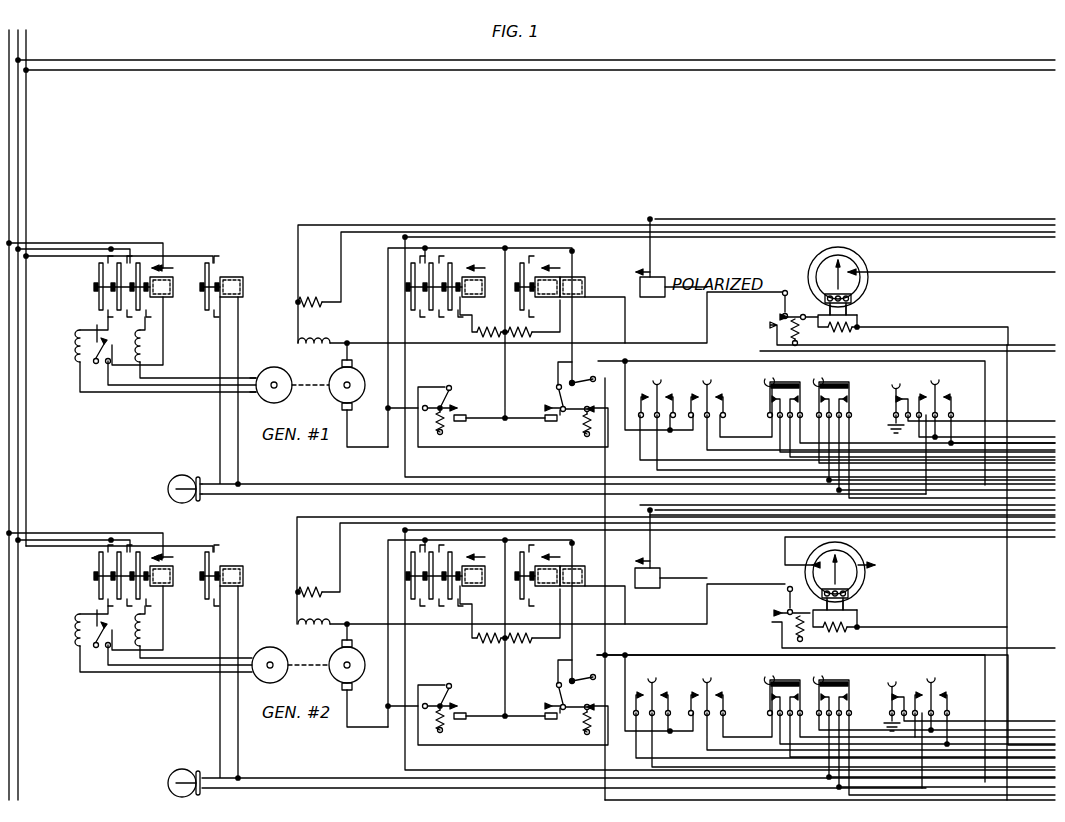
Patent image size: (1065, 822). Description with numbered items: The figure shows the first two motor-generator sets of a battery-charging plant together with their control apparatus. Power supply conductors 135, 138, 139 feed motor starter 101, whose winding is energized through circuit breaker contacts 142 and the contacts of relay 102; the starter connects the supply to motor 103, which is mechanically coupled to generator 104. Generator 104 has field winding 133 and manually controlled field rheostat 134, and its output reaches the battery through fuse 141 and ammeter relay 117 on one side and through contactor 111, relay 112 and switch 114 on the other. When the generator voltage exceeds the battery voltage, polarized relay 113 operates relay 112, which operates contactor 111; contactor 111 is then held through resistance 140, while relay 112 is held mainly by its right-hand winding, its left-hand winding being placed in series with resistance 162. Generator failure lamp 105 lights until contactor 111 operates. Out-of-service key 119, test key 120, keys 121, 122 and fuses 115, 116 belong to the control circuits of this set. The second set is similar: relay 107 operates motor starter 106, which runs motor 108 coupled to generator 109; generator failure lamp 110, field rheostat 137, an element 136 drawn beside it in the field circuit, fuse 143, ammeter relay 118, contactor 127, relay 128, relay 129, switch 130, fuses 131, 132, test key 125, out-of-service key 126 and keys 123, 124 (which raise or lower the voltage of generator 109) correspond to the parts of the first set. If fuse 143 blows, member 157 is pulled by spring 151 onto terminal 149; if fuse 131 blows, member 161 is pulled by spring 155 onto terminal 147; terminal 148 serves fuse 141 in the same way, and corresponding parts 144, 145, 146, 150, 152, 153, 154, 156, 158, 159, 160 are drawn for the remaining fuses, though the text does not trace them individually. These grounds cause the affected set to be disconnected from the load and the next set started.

The motor starter 101 is at (160, 275).
The relay 102 is at (229, 277).
The motor 103 is at (277, 378).
The generator 104 is at (337, 392).
The generator failure lamp 105 is at (168, 489).
The motor starter 106 is at (160, 564).
The relay 107 is at (229, 566).
The motor 108 is at (272, 658).
The generator 109 is at (340, 652).
The generator failure lamp 110 is at (170, 776).
The contactor 111 is at (470, 283).
The relay 112 is at (580, 282).
The polarized relay 113 is at (655, 280).
The switch 114 is at (594, 378).
The fuse 115 is at (455, 395).
The fuse 116 is at (556, 397).
The ammeter relay 117 is at (848, 268).
The ammeter relay 118 is at (848, 563).
The out-of-service key 119 is at (917, 360).
The test key 120 is at (792, 388).
The key 121 is at (710, 386).
The key 122 is at (658, 386).
The key 123 is at (656, 688).
The key 124 is at (710, 688).
The test key 125 is at (800, 665).
The out-of-service key 126 is at (920, 675).
The contactor 127 is at (470, 590).
The relay 128 is at (566, 588).
The relay 129 is at (662, 578).
The switch 130 is at (777, 710).
The fuse 131 is at (556, 695).
The fuse 132 is at (455, 693).
The field winding 133 is at (312, 341).
The manually controlled field rheostat 134 is at (322, 290).
The power supply conductor 135 is at (9, 120).
The field winding 136 is at (312, 622).
The field rheostat 137 is at (322, 580).
The power supply conductor 138 is at (18, 136).
The power supply conductor 139 is at (26, 152).
The resistance 140 is at (478, 337).
The fuse 141 is at (782, 298).
The circuit breaker contacts 142 is at (100, 358).
The fuse 143 is at (788, 592).
The contact 144 is at (460, 422).
The contact 145 is at (552, 422).
The contact 146 is at (460, 720).
The terminal 147 is at (552, 720).
The terminal 148 is at (770, 326).
The terminal 149 is at (778, 626).
The resistor 150 is at (899, 325).
The spring 151 is at (910, 624).
The resistor 152 is at (438, 420).
The resistor 153 is at (590, 430).
The resistor 154 is at (435, 727).
The spring 155 is at (588, 735).
The contact 156 is at (802, 313).
The member 157 is at (781, 610).
The contact 158 is at (458, 410).
The contact 159 is at (588, 399).
The contact 160 is at (458, 708).
The member 161 is at (588, 697).
The resistance 162 is at (508, 337).